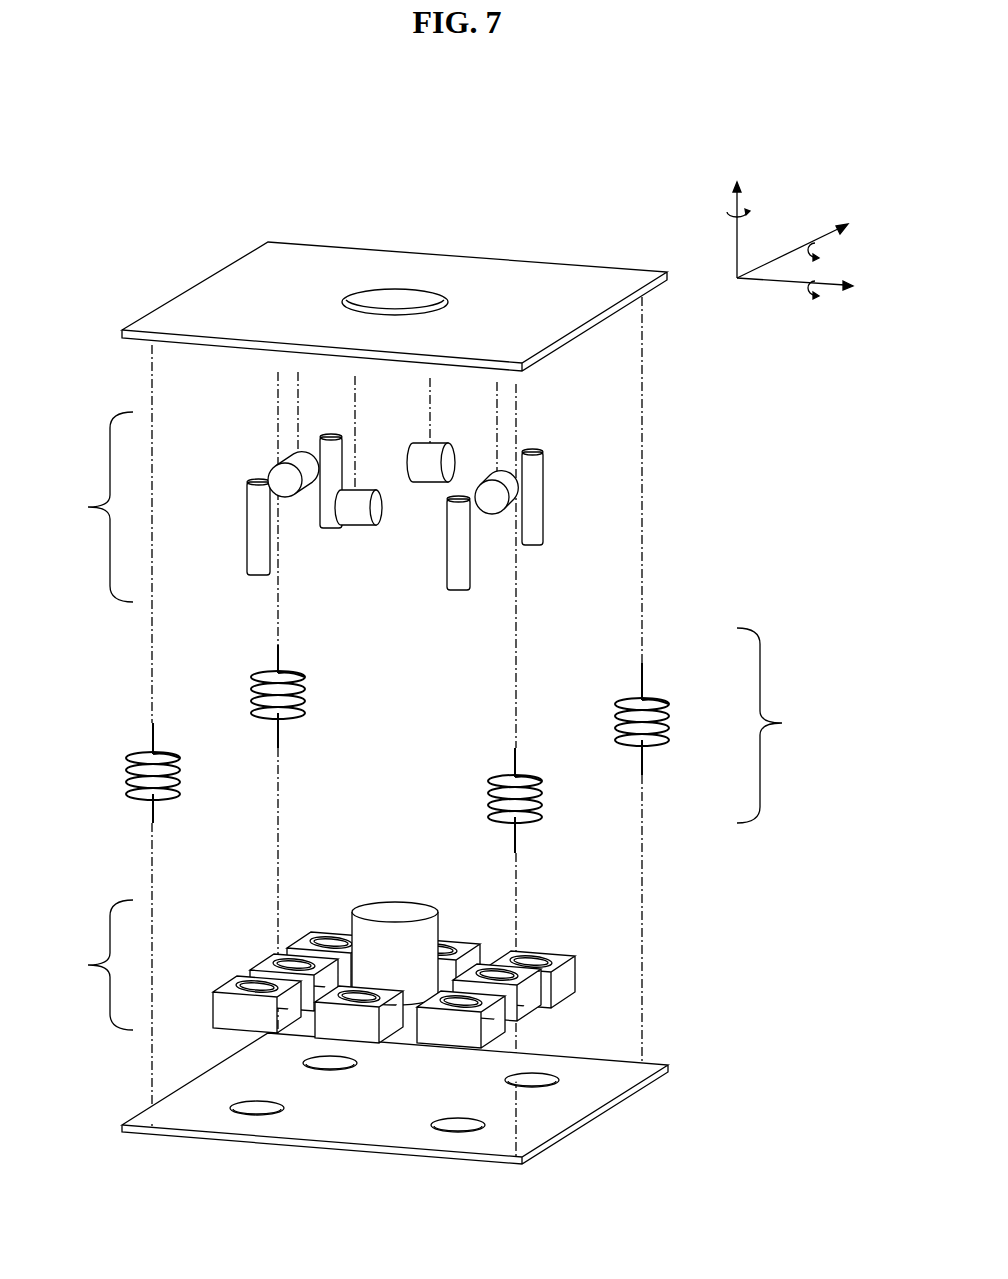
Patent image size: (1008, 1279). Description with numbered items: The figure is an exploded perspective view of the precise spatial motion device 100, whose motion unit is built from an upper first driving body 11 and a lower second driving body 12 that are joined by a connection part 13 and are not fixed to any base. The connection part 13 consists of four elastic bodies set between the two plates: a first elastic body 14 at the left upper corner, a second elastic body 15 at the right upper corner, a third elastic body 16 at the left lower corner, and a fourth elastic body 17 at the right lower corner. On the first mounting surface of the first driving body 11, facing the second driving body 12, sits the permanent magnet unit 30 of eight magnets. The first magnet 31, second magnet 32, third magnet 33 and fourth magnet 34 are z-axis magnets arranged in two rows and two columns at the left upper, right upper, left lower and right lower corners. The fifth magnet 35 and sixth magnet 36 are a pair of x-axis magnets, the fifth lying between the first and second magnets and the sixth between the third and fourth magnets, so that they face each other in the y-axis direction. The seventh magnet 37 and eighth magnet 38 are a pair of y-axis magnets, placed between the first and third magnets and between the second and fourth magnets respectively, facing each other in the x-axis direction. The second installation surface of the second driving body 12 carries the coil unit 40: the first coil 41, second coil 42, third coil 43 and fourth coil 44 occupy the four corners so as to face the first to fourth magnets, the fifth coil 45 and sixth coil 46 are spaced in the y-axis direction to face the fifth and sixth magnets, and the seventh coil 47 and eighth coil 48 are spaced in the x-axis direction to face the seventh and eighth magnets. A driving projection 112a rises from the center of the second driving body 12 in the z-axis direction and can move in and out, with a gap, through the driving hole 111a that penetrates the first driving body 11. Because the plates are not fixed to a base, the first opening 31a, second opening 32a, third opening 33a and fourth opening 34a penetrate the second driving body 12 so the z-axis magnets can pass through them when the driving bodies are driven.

The precise spatial motion device 100 is at (370, 128).
The first driving body 11 is at (394, 281).
The driving hole 111a is at (394, 300).
The second driving body 12 is at (410, 1124).
The connection part 13 is at (472, 741).
The first elastic body 14 is at (300, 672).
The second elastic body 15 is at (658, 700).
The third elastic body 16 is at (165, 792).
The fourth elastic body 17 is at (525, 822).
The permanent magnet unit 30 is at (330, 497).
The first magnet 31 is at (330, 437).
The second magnet 32 is at (535, 485).
The third magnet 33 is at (258, 520).
The fourth magnet 34 is at (458, 552).
The fifth magnet 35 is at (422, 455).
The sixth magnet 36 is at (353, 512).
The seventh magnet 37 is at (283, 478).
The eighth magnet 38 is at (494, 500).
The coil unit 40 is at (332, 1022).
The first coil 41 is at (340, 945).
The second coil 42 is at (545, 965).
The third coil 43 is at (224, 990).
The fourth coil 44 is at (492, 1030).
The fifth coil 45 is at (445, 945).
The sixth coil 46 is at (350, 1025).
The seventh coil 47 is at (262, 968).
The eighth coil 48 is at (527, 1003).
The driving projection 112a is at (395, 912).
The first opening 31a is at (330, 1068).
The second opening 32a is at (550, 1085).
The third opening 33a is at (255, 1112).
The fourth opening 34a is at (461, 1130).